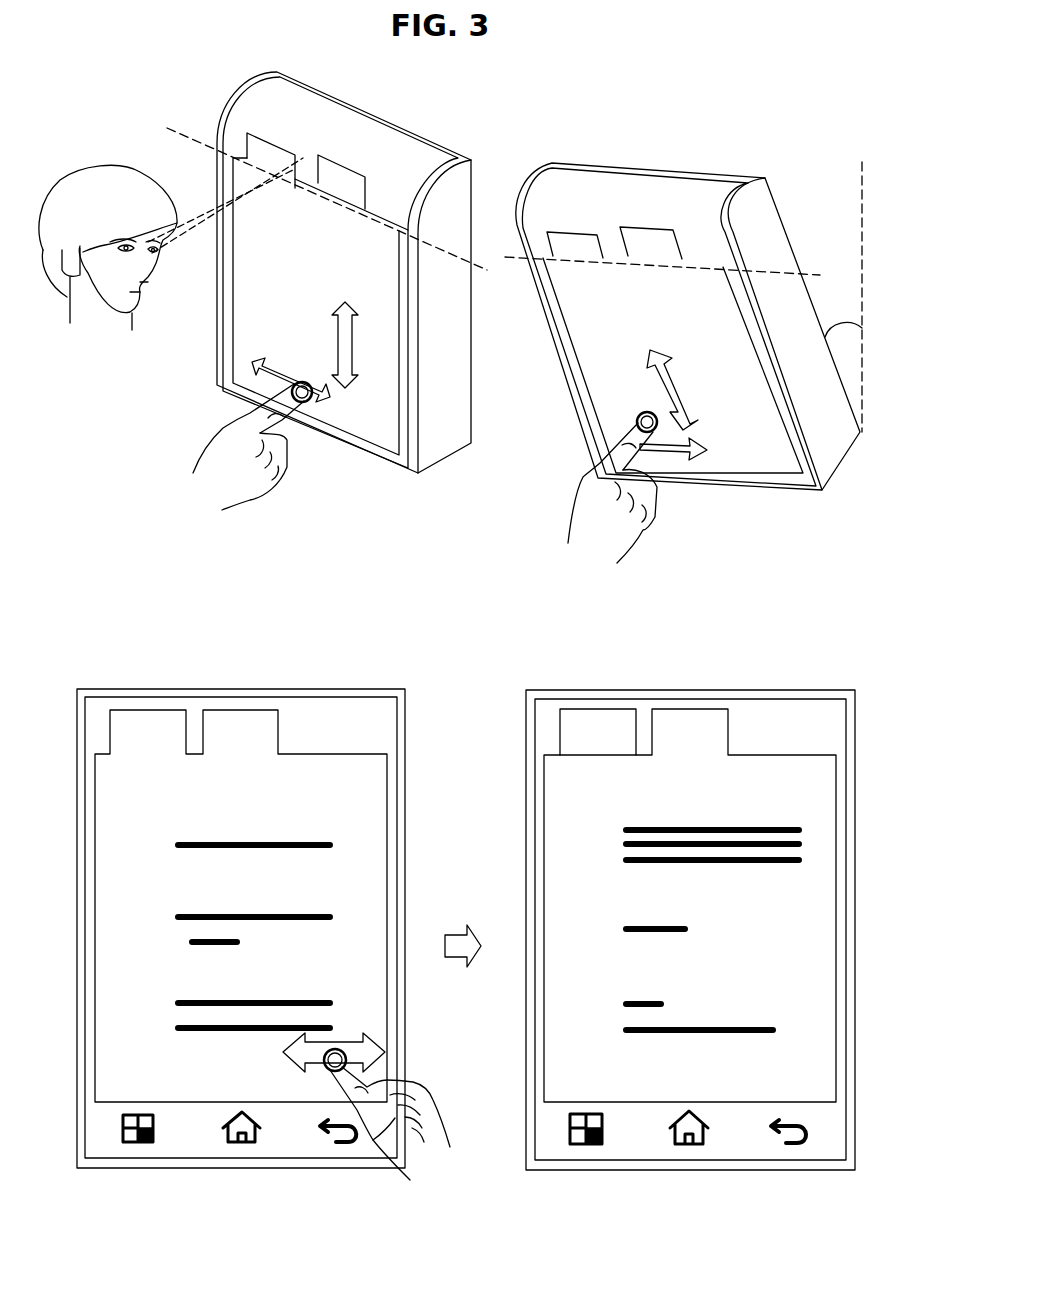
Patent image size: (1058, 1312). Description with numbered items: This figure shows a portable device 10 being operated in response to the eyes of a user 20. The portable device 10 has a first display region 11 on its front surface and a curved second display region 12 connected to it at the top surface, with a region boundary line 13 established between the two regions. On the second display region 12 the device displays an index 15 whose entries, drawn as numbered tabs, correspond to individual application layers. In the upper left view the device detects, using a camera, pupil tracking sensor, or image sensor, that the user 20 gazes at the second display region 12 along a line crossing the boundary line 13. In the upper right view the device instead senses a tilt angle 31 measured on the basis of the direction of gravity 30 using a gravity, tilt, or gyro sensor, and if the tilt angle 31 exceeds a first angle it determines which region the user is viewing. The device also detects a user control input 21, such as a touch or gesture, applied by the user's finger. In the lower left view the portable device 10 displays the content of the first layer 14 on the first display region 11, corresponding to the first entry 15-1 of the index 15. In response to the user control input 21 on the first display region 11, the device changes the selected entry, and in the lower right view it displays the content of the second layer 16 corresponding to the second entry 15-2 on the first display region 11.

The portable device 10 is at (445, 425).
The first display region 11 is at (217, 328).
The second display region 12 is at (415, 157).
The region boundary line 13 is at (195, 140).
The first layer 14 is at (127, 977).
The index 15 is at (273, 142).
The first entry 15-1 is at (132, 723).
The second entry 15-2 is at (670, 721).
The second layer 16 is at (806, 976).
The user 20 is at (102, 187).
The user control input 21 is at (235, 490).
The direction of gravity 30 is at (860, 197).
The tilt angle 31 is at (843, 323).